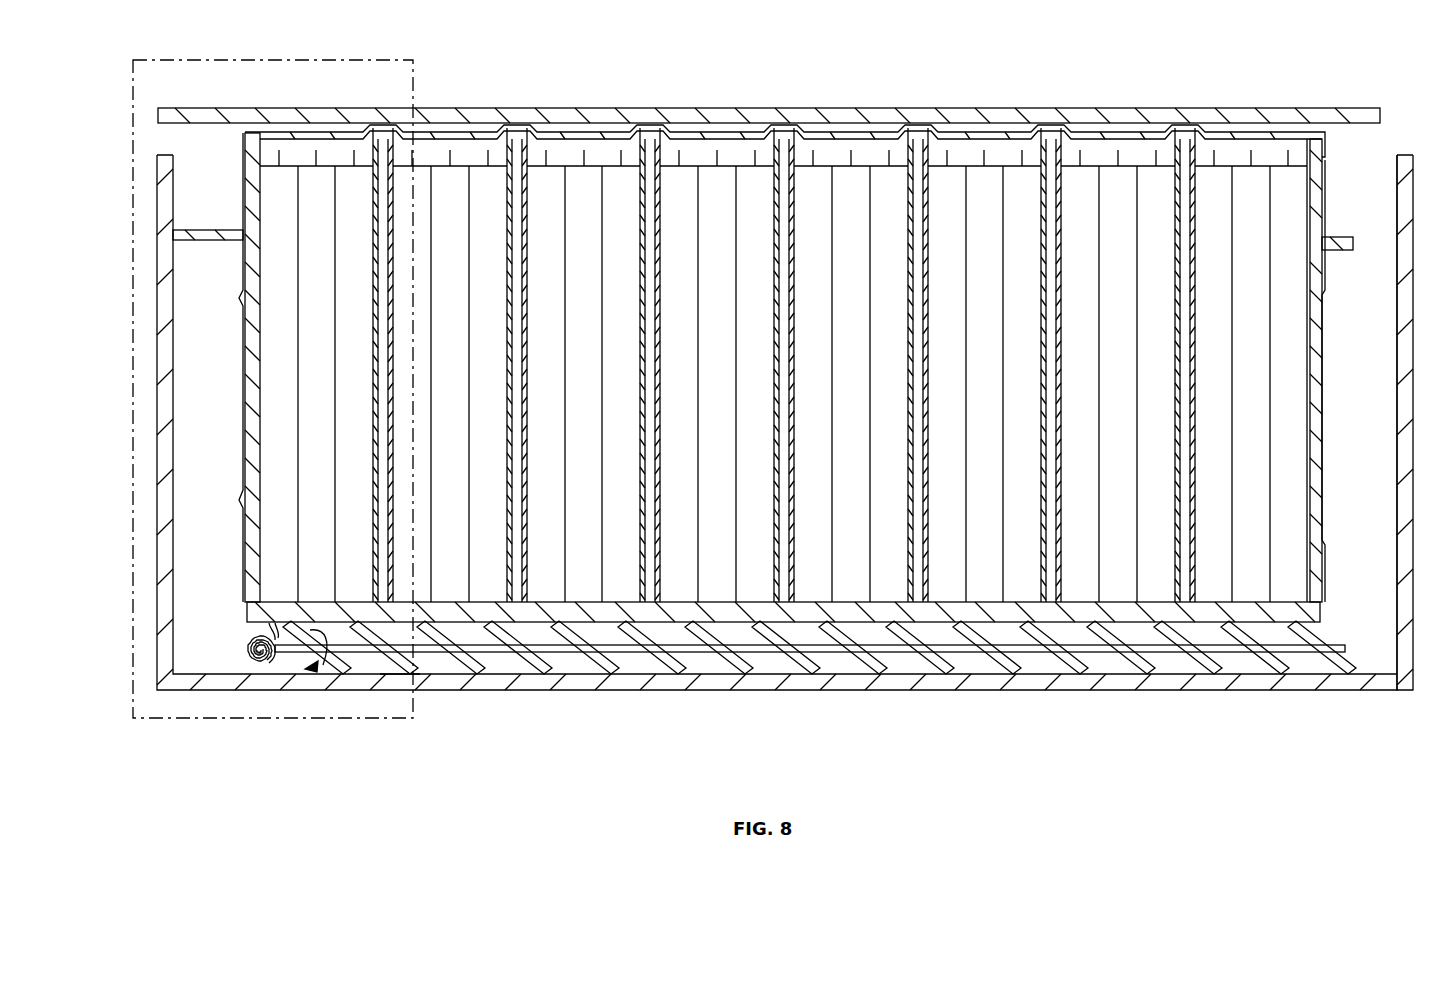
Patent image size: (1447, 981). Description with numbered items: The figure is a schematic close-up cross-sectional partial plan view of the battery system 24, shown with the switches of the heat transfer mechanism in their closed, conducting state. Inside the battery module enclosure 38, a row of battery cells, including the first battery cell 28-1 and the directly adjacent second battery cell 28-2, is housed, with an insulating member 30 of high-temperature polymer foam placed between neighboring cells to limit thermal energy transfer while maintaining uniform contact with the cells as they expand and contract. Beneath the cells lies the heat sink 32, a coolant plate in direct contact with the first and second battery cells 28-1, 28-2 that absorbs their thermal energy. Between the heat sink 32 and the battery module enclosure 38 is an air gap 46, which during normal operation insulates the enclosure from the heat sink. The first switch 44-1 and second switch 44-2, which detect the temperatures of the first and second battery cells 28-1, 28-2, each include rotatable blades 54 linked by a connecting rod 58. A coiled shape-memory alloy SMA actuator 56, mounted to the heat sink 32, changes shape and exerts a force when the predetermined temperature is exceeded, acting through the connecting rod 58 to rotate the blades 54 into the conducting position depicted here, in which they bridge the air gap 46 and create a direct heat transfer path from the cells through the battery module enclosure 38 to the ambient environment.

The battery system 24 is at (425, 78).
The insulating member 30 is at (322, 177).
The first battery cell 28-1 is at (273, 457).
The second battery cell 28-2 is at (350, 393).
The heat sink 32 is at (247, 613).
The battery module enclosure 38 is at (187, 690).
The air gap 46 is at (1365, 662).
The SMA actuator 56 is at (243, 667).
The first switch 44-1 is at (312, 702).
The second switch 44-2 is at (400, 683).
The connecting rod 58 is at (692, 652).
The rotatable blade 54 is at (378, 655).